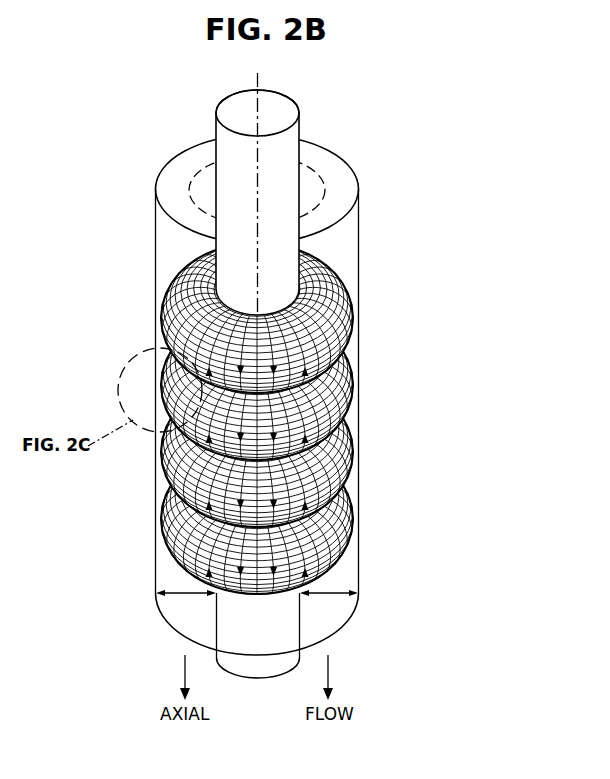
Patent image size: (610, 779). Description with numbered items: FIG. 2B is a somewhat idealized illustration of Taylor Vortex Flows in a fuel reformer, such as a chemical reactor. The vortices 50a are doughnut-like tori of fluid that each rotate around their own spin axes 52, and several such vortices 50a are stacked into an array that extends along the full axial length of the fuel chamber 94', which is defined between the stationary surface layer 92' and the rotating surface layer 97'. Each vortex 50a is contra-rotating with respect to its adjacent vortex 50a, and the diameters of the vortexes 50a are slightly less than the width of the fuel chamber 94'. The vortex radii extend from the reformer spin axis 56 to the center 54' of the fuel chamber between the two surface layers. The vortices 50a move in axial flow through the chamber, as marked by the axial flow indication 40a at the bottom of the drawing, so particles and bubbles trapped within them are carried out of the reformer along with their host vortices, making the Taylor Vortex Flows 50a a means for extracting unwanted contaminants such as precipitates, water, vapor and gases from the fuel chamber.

The spin axis 56 is at (261, 92).
The surface layer 97' is at (191, 112).
The center of fuel chamber 54' is at (291, 158).
The surface layer 92' is at (278, 368).
The fuel chamber 94' is at (232, 189).
The Taylor Vortex Flows 50a is at (357, 282).
The tori spin axes 52 is at (156, 315).
The axial flow passage 40a is at (163, 598).